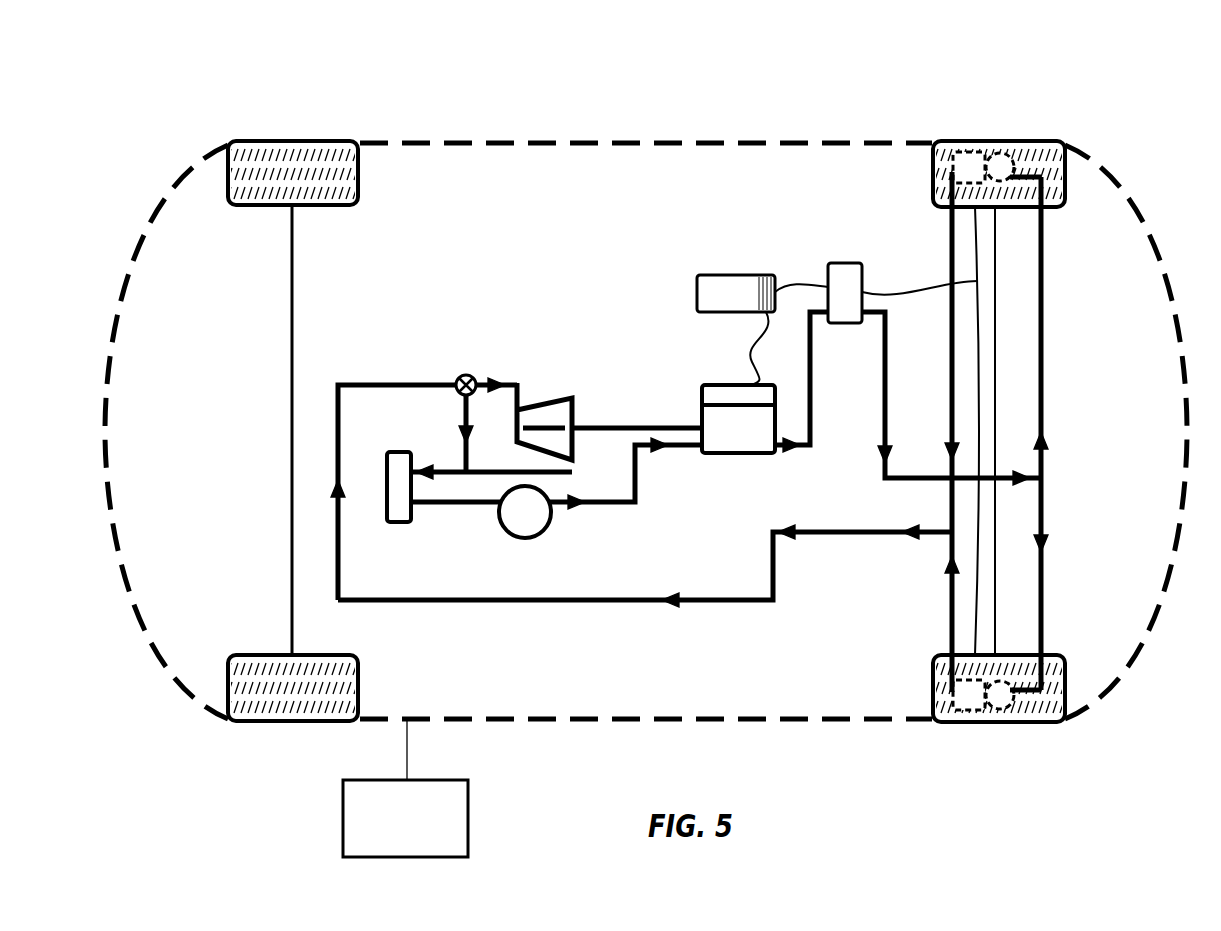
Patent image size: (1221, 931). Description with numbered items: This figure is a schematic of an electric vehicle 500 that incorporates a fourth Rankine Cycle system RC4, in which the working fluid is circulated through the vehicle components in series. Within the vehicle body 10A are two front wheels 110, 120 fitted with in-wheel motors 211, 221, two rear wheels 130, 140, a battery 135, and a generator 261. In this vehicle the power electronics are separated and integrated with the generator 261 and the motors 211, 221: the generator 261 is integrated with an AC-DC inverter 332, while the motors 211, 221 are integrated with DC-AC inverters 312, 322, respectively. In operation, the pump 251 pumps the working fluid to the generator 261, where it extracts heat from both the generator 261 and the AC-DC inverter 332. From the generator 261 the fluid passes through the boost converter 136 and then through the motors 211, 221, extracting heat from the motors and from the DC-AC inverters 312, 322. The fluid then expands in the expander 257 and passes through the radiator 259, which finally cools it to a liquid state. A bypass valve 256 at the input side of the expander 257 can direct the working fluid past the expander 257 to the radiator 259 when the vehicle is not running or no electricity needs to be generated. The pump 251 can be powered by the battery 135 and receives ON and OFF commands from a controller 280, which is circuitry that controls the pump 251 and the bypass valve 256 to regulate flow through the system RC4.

The vehicle body 10A is at (571, 137).
The electric vehicle 500 is at (1133, 96).
The rear wheel 130 is at (226, 147).
The rear wheel 140 is at (232, 691).
The front wheel 110 is at (1057, 140).
The front wheel 120 is at (1049, 722).
The DC-AC inverter 312 is at (953, 150).
The in-wheel motor 211 is at (997, 153).
The DC-AC inverter 322 is at (958, 712).
The in-wheel motor 221 is at (1000, 712).
The fourth Rankine Cycle system RC4 is at (380, 352).
The bypass valve 256 is at (475, 378).
The expander 257 is at (573, 397).
The radiator 259 is at (387, 456).
The pump 251 is at (525, 512).
The generator 261 is at (738, 419).
The AC-DC inverter 332 is at (710, 394).
The battery 135 is at (762, 330).
The boost converter 136 is at (902, 293).
The controller 280 is at (405, 789).